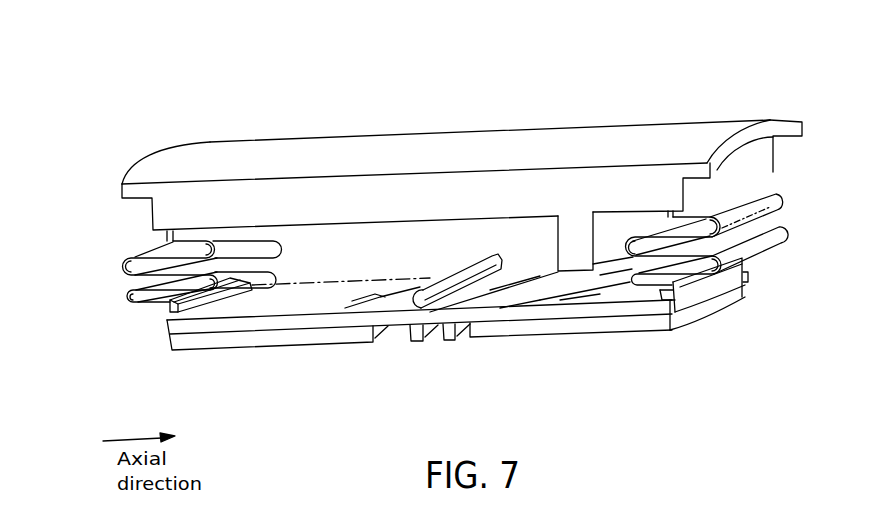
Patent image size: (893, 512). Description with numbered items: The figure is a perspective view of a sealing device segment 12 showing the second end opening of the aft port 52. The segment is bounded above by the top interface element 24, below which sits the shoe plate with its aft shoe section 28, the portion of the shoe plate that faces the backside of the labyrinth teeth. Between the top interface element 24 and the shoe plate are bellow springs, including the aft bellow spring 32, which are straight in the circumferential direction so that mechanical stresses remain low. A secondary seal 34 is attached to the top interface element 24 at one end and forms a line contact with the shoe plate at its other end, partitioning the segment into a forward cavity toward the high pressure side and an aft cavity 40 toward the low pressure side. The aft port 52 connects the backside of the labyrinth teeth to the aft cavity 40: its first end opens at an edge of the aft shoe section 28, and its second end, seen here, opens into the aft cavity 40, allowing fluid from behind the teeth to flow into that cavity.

The sealing device segment 12 is at (731, 70).
The top interface element 24 is at (407, 147).
The aft shoe section 28 is at (523, 336).
The aft bellow spring 32 is at (779, 198).
The secondary seal 34 is at (495, 283).
The aft cavity 40 is at (615, 239).
The aft port 52 is at (577, 298).